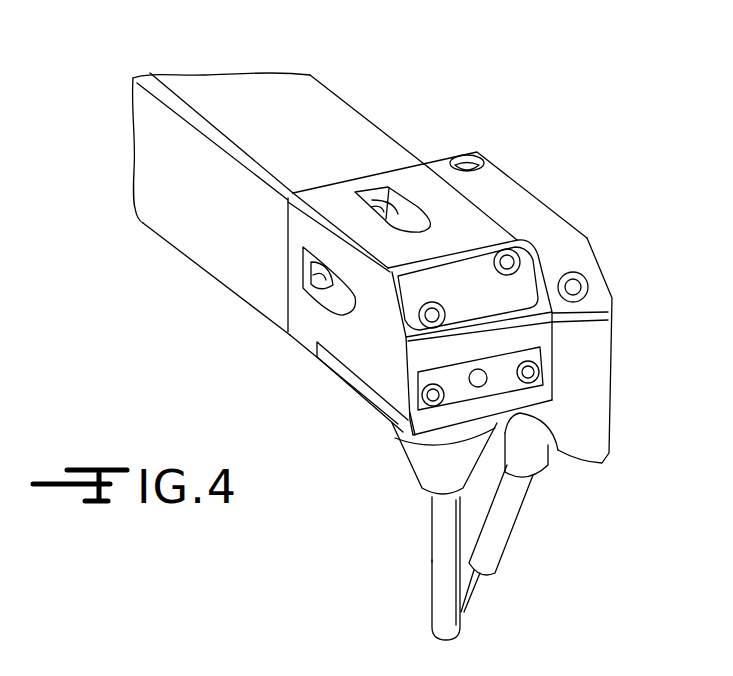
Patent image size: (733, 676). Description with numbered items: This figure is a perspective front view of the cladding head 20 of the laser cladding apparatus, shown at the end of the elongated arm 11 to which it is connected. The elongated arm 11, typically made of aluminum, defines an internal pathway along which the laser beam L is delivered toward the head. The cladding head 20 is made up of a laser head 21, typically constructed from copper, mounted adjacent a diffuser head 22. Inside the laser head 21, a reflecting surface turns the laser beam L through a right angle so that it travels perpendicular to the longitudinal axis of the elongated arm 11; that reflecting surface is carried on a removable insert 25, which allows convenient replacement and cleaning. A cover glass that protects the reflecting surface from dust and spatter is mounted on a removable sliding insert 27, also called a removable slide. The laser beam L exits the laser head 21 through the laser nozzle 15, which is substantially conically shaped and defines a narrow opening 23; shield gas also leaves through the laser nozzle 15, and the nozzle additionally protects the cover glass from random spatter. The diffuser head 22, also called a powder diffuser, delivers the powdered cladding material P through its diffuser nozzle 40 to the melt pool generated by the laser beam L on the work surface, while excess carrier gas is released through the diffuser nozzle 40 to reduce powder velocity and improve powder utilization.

The elongated arm 11 is at (285, 113).
The cladding head 20 is at (456, 346).
The laser head 21 is at (312, 332).
The diffuser head 22 is at (525, 207).
The removable insert 25 is at (492, 285).
The removable sliding insert 27 is at (520, 372).
The laser nozzle 15 is at (422, 458).
The opening 23 is at (418, 505).
The diffuser nozzle 40 is at (536, 517).
The laser beam L is at (430, 568).
The powder P is at (473, 585).